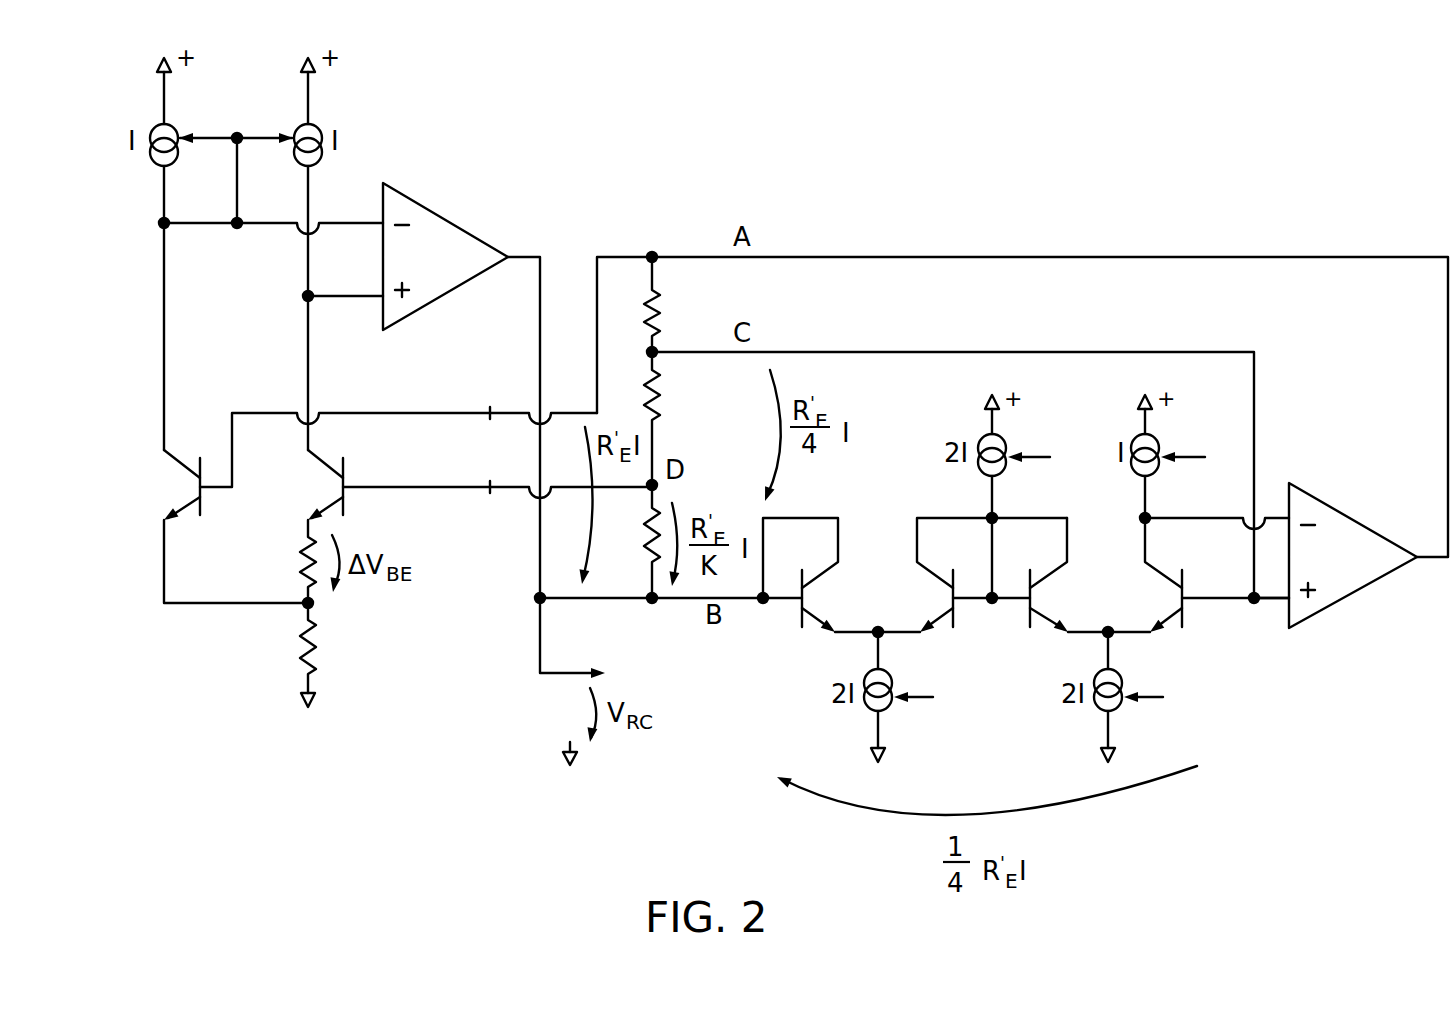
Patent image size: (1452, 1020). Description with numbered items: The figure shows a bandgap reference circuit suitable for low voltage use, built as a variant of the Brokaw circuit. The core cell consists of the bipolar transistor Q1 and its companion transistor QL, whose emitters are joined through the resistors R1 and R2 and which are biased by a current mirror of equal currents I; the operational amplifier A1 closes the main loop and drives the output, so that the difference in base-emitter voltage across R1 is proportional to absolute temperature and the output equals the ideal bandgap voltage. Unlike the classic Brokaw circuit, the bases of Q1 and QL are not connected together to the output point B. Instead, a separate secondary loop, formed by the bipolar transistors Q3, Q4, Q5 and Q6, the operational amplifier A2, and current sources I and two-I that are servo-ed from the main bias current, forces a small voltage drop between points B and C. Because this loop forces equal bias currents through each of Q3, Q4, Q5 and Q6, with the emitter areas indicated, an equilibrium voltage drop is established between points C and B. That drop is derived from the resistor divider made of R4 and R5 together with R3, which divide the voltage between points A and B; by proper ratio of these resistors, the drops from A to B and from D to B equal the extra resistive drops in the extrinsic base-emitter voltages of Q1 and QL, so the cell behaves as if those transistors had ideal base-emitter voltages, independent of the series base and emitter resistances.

The bipolar transistor Q1 is at (358, 465).
The transistor QL (xK) QL is at (459, 485).
The resistor R1 is at (289, 561).
The resistor R2 is at (289, 655).
The resistor R3 is at (670, 304).
The resistor R4 is at (670, 418).
The resistor R5 is at (633, 541).
The operational amplifier A1 is at (445, 256).
The operational amplifier A2 is at (1353, 553).
The bipolar transistor Q3 is at (807, 556).
The bipolar transistor Q4 is at (984, 556).
The bipolar transistor Q5 is at (1056, 556).
The bipolar transistor Q6 is at (1207, 577).